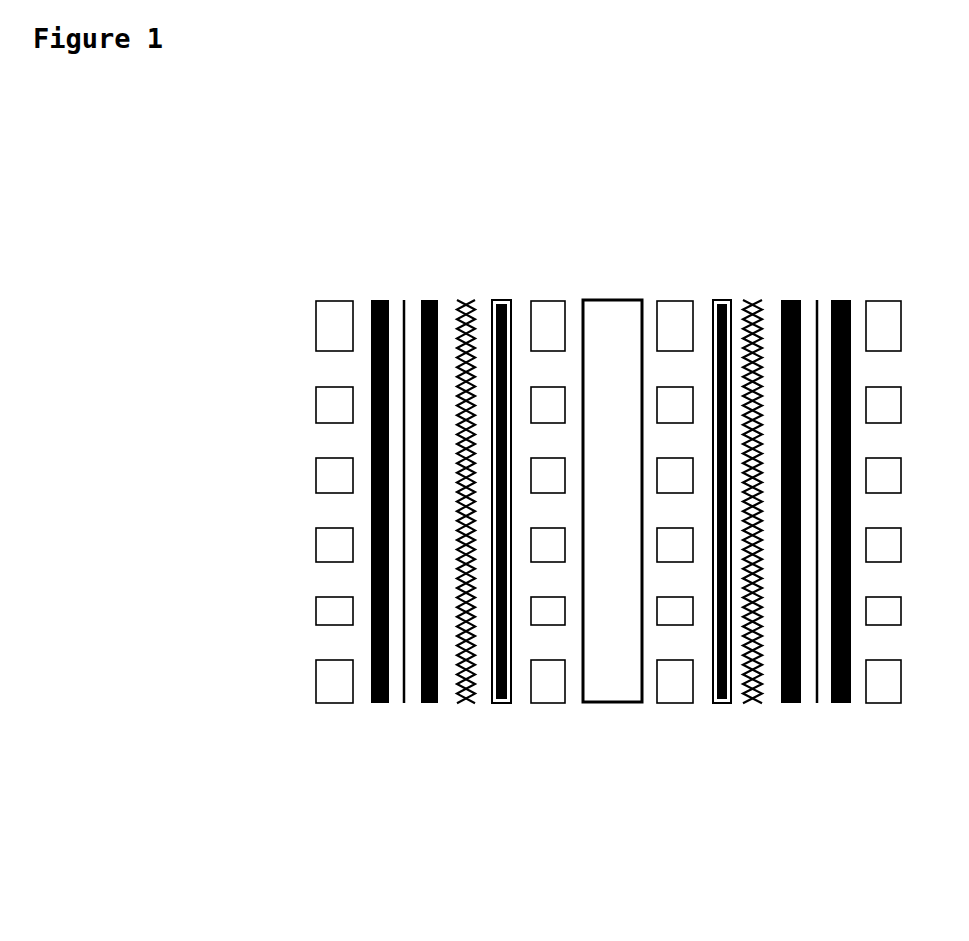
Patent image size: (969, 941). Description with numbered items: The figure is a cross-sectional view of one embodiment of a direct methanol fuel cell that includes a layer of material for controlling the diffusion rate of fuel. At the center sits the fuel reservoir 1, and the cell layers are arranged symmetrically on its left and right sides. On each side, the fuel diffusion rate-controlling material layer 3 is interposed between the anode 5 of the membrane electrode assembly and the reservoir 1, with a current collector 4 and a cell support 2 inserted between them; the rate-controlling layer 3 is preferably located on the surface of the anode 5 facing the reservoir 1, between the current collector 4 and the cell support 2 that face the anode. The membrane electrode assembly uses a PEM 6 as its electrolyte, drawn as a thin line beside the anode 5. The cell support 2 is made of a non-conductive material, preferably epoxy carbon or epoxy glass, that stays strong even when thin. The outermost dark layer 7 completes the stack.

The fuel reservoir 1 is at (611, 281).
The cell support 2 is at (340, 727).
The fuel diffusion rate-controlling material layer 3 is at (497, 279).
The current collector 4 is at (468, 727).
The anode 5 is at (430, 727).
The PEM 6 is at (406, 279).
The outer catalyst layer 7 is at (383, 727).